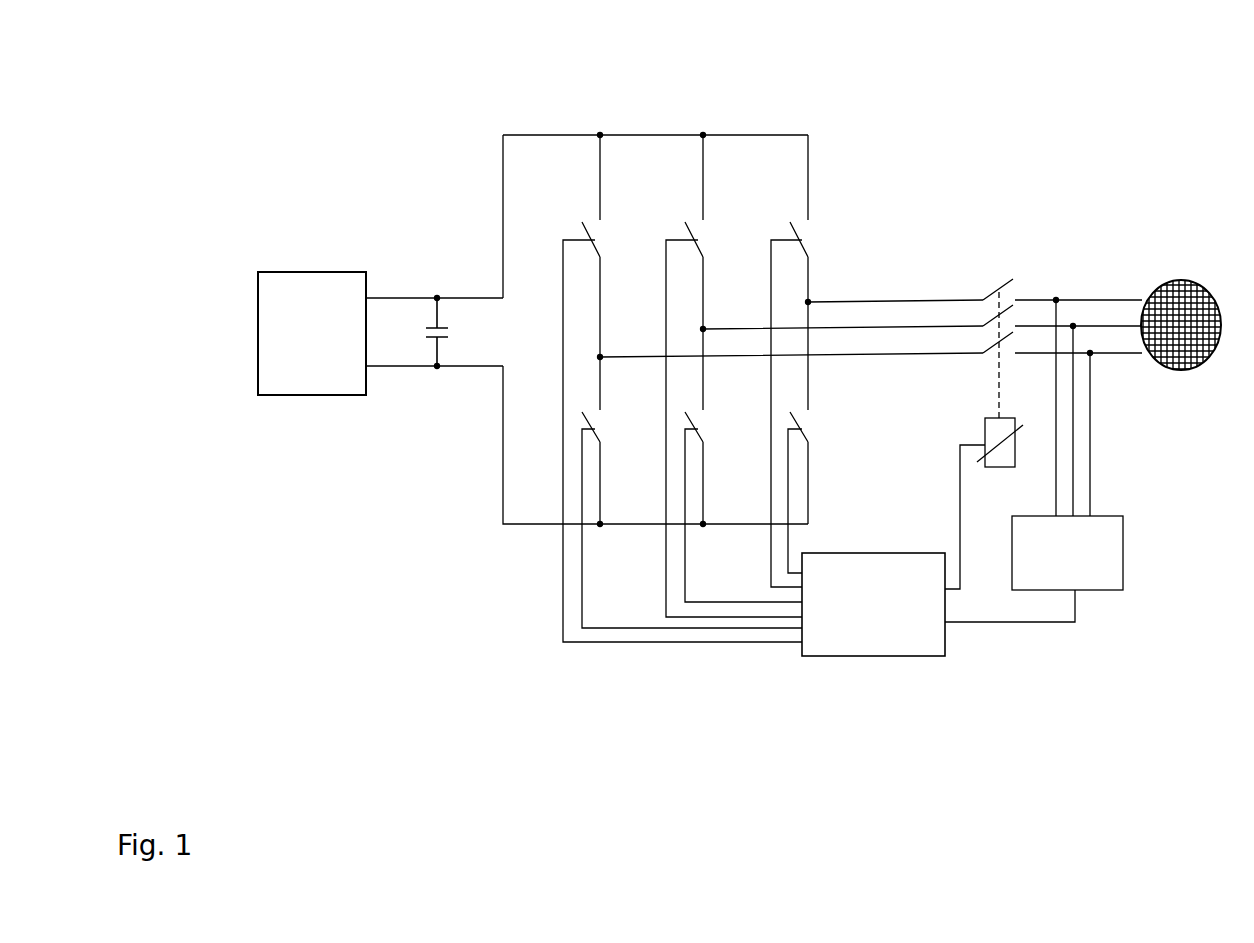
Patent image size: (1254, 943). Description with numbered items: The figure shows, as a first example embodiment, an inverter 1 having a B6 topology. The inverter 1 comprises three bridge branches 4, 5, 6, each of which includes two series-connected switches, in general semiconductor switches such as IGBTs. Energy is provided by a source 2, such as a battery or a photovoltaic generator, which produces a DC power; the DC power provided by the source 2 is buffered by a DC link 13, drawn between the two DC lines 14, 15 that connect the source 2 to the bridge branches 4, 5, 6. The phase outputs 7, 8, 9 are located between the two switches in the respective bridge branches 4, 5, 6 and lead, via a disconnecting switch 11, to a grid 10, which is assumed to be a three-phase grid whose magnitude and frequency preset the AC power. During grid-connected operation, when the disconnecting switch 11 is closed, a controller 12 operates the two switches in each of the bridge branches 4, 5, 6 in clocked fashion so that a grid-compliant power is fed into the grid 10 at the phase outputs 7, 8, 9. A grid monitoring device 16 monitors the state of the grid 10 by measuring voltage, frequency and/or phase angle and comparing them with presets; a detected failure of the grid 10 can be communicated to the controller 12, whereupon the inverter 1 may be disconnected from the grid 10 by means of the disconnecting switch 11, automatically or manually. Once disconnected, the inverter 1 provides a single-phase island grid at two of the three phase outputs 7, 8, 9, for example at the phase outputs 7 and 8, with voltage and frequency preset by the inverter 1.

The inverter 1 is at (757, 105).
The source 2 is at (336, 250).
The bridge branch 4 is at (600, 135).
The bridge branch 5 is at (703, 135).
The bridge branch 6 is at (808, 135).
The phase output 7 is at (600, 357).
The phase output 8 is at (703, 329).
The phase output 9 is at (808, 302).
The grid 10 is at (1186, 278).
The disconnecting switch 11 is at (1002, 275).
The controller 12 is at (897, 656).
The DC link 13 is at (437, 296).
The positive DC line 14 is at (377, 295).
The negative DC line 15 is at (378, 370).
The grid monitoring device 16 is at (1123, 572).